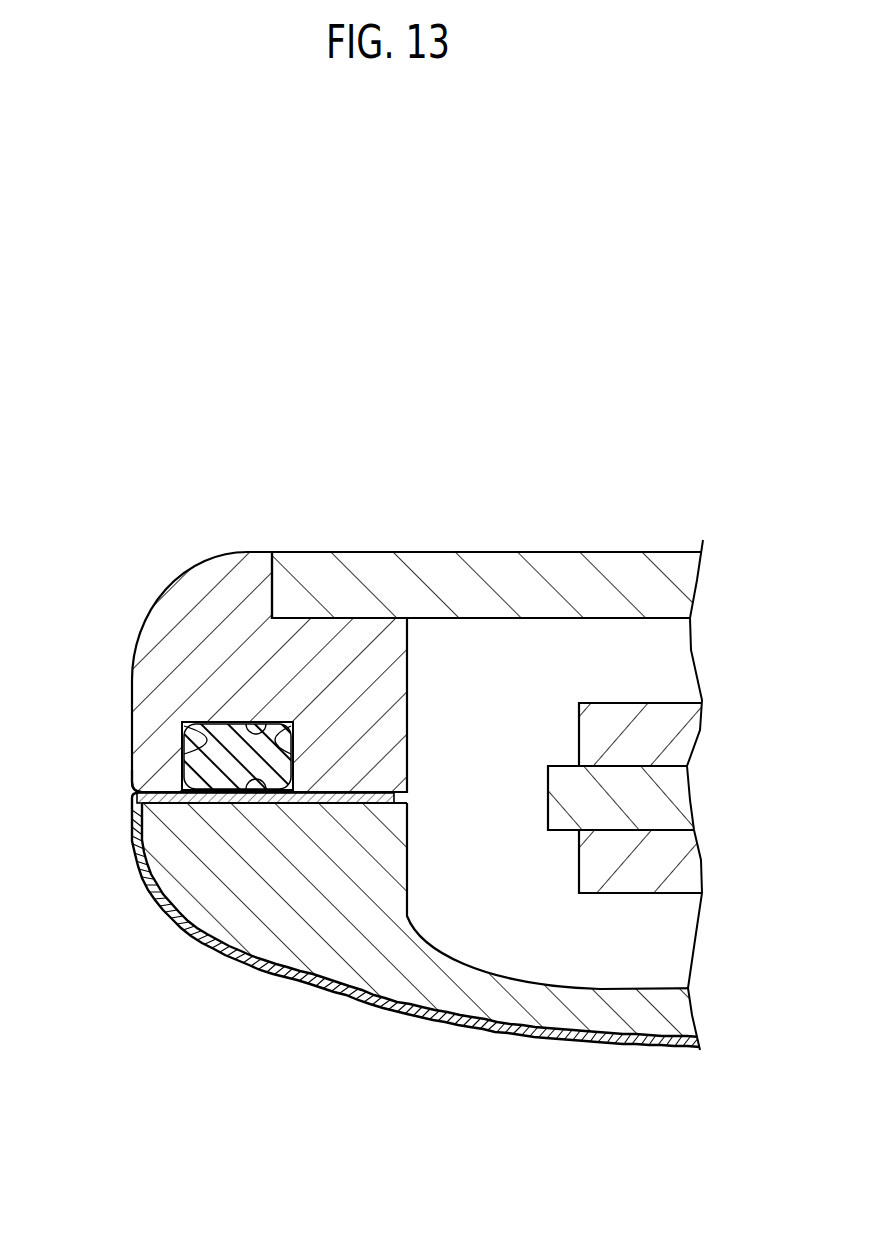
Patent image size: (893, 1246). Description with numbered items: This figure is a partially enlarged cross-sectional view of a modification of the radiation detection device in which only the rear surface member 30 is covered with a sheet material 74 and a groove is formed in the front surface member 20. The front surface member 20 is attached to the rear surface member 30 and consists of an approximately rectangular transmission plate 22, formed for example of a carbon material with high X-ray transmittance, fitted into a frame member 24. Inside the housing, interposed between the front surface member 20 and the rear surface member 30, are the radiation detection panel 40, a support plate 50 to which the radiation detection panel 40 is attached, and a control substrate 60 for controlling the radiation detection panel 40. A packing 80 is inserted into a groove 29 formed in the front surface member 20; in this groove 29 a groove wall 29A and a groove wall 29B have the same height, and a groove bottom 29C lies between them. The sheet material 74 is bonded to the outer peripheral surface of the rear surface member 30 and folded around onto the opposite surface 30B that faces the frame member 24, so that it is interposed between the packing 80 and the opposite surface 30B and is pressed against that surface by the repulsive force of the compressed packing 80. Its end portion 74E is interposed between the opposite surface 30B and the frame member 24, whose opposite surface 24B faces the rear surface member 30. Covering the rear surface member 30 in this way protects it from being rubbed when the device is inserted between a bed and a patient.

The front surface member 20 is at (365, 453).
The frame member 24 is at (247, 552).
The transmission plate 22 is at (350, 552).
The groove 29 is at (383, 647).
The groove wall 29A is at (208, 750).
The groove bottom 29C is at (267, 732).
The groove wall 29B is at (290, 722).
The opposite surface 30B is at (353, 794).
The end portion 74E is at (396, 797).
The radiation detection panel 40 is at (663, 703).
The support plate 50 is at (663, 830).
The control substrate 60 is at (663, 893).
The opposite surface 24B is at (163, 806).
The packing 80 is at (260, 786).
The sheet material 74 is at (492, 1032).
The rear surface member 30 is at (633, 1040).